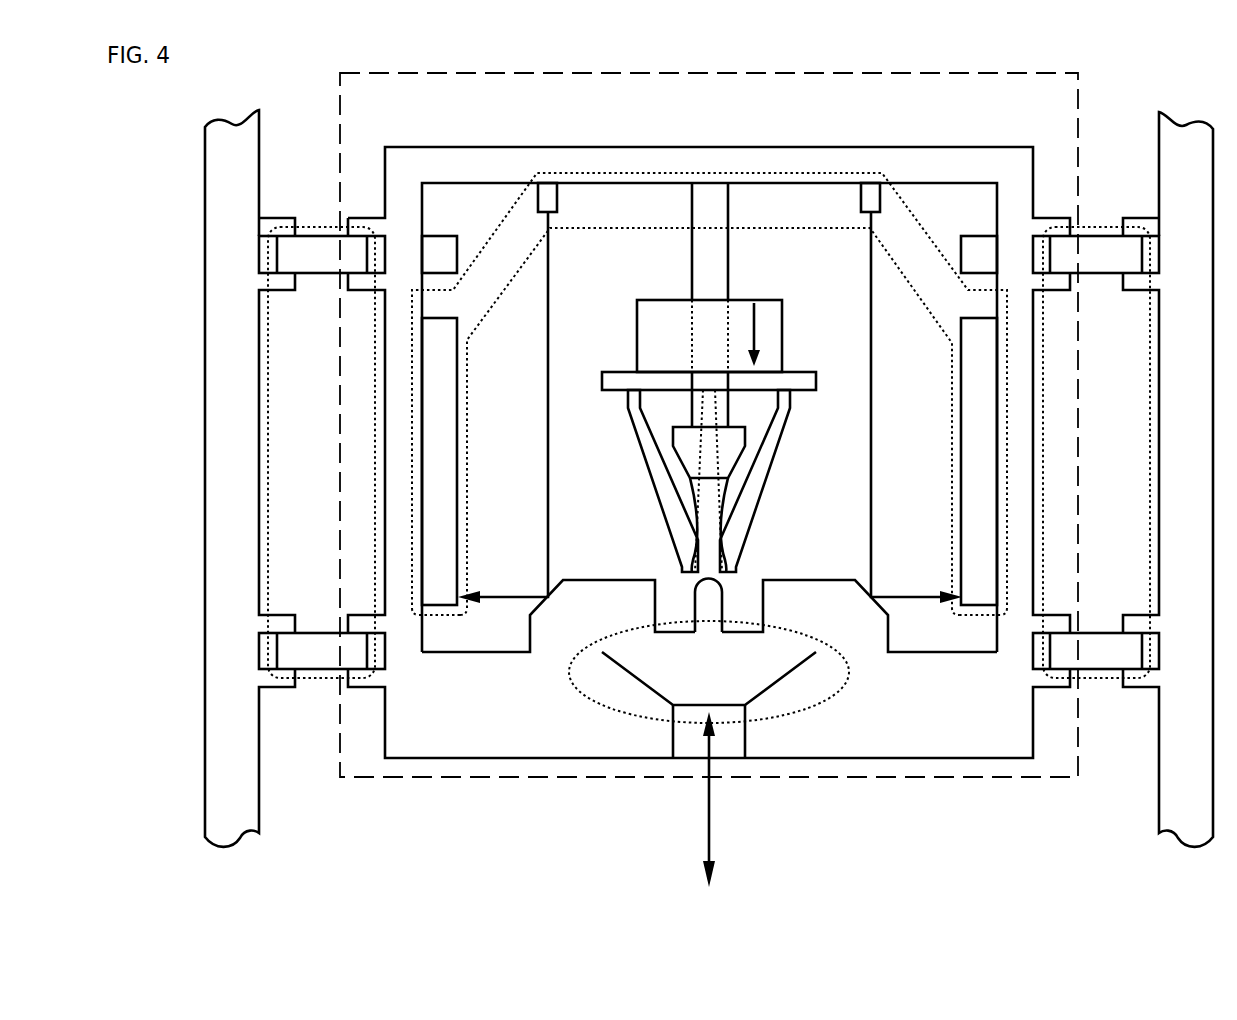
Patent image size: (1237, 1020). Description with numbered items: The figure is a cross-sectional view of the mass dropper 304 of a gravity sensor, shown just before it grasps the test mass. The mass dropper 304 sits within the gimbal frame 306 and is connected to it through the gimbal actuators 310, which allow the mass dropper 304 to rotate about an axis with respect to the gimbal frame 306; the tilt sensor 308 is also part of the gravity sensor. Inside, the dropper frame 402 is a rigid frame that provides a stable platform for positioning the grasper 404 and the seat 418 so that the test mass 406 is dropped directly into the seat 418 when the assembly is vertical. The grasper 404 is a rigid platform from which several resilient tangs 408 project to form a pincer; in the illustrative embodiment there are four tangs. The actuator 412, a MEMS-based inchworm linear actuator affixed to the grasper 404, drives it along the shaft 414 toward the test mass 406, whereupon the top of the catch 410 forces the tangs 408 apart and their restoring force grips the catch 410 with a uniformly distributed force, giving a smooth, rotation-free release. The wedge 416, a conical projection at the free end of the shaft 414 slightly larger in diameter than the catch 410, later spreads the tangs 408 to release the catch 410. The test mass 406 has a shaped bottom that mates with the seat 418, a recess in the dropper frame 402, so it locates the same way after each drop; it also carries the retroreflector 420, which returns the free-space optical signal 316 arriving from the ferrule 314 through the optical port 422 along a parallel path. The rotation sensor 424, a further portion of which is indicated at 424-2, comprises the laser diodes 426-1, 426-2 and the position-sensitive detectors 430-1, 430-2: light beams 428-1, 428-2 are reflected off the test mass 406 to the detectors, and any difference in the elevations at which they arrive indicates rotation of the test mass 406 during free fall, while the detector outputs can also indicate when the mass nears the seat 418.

The mass dropper 304 is at (510, 108).
The gimbal frame 306 is at (218, 160).
The tilt sensor 308 is at (447, 248).
The gimbal actuators 310 is at (268, 425).
The ferrule 314 is at (727, 912).
The free-space optical signal 316 is at (712, 845).
The dropper frame 402 is at (453, 746).
The grasper 404 is at (607, 373).
The test mass 406 is at (637, 585).
The tangs 408 is at (747, 503).
The catch 410 is at (712, 602).
The actuator 412 is at (652, 334).
The shaft 414 is at (720, 272).
The wedge 416 is at (692, 453).
The seat 418 is at (605, 705).
The retroreflector 420 is at (696, 696).
The optical port 422 is at (692, 745).
The rotation sensor 424 is at (910, 210).
The outer guide outline right portion 424-2 is at (953, 494).
The laser diode 426-1 is at (557, 199).
The laser diode 426-2 is at (863, 199).
The light beam 428-1 is at (548, 448).
The light beam 428-2 is at (872, 448).
The position-sensitive detector 430-1 is at (447, 377).
The position-sensitive detector 430-2 is at (970, 378).